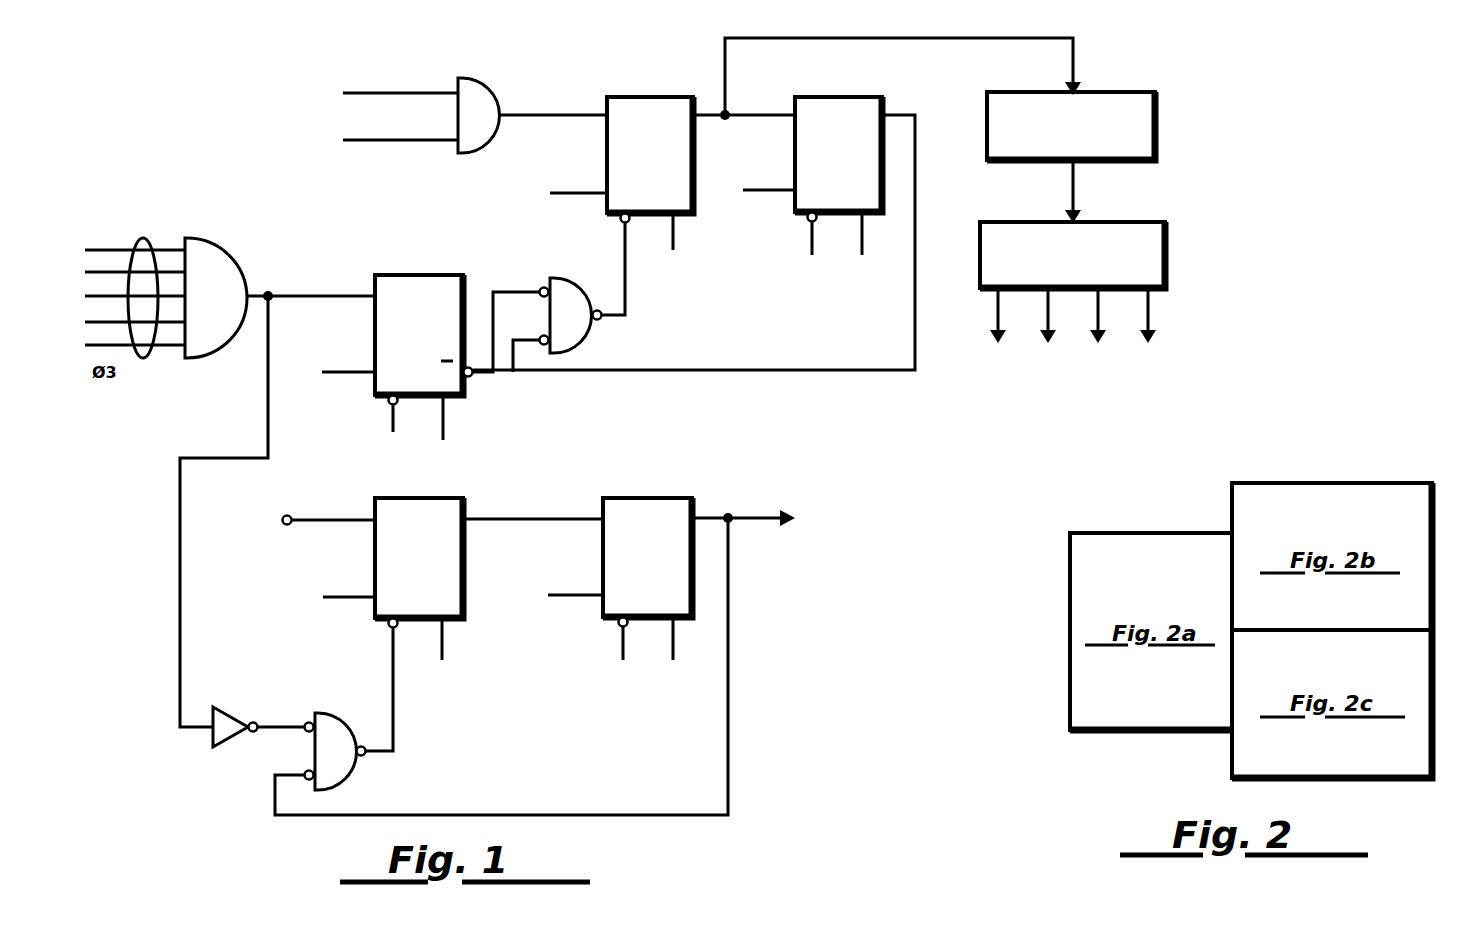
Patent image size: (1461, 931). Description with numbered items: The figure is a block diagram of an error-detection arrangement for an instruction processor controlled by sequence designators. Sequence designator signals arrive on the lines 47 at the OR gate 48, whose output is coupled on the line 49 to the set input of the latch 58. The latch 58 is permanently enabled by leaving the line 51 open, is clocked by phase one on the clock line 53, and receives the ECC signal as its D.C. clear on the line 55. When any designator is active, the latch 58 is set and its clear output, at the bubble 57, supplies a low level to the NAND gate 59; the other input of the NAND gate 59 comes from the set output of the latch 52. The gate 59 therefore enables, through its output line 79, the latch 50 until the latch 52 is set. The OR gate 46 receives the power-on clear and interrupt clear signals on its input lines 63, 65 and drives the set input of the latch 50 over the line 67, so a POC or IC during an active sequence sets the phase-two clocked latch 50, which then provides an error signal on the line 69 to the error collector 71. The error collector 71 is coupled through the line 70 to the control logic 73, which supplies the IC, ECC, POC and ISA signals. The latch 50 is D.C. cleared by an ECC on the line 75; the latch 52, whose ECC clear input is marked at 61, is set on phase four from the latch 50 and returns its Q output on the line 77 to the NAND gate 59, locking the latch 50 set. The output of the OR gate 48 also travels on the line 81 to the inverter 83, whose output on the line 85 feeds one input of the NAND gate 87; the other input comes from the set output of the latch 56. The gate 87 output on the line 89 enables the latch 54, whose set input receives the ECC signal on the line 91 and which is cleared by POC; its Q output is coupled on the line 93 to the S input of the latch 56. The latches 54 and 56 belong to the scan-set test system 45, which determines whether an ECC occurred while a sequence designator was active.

The scan-set test system 45 is at (383, 410).
The OR gate 46 is at (503, 90).
The lines 47 is at (145, 240).
The OR gate 48 is at (235, 262).
The line 49 is at (306, 292).
The latch 50 is at (633, 95).
The line 51 is at (392, 430).
The latch 52 is at (822, 95).
The clock line 53 is at (460, 415).
The latch 54 is at (400, 498).
The line 55 is at (352, 367).
The latch 56 is at (630, 498).
The inverted output of flip-flop 58 57 is at (470, 378).
The latch 58 is at (393, 273).
The NAND gate 59 is at (578, 277).
The ECC input line 61 is at (780, 193).
The input line 63 is at (410, 92).
The input line 65 is at (423, 145).
The line 67 is at (555, 112).
The line 69 is at (938, 37).
The line from error collector to control logic 70 is at (1073, 186).
The error collector 71 is at (1158, 110).
The control logic 73 is at (1168, 243).
The line 75 is at (573, 195).
The line 77 is at (715, 368).
The output line of gate 59 79 is at (627, 283).
The line 81 is at (180, 628).
The inverter 83 is at (235, 742).
The line 85 is at (285, 718).
The NAND gate 87 is at (365, 695).
The output line of gate 87 89 is at (395, 712).
The line 91 is at (330, 525).
The line 93 is at (515, 517).